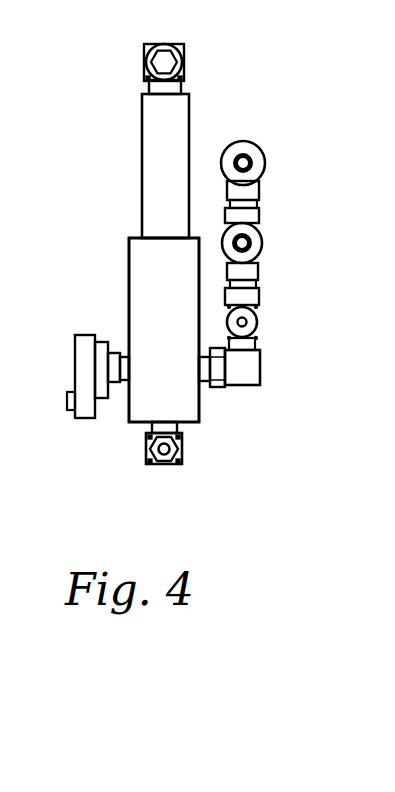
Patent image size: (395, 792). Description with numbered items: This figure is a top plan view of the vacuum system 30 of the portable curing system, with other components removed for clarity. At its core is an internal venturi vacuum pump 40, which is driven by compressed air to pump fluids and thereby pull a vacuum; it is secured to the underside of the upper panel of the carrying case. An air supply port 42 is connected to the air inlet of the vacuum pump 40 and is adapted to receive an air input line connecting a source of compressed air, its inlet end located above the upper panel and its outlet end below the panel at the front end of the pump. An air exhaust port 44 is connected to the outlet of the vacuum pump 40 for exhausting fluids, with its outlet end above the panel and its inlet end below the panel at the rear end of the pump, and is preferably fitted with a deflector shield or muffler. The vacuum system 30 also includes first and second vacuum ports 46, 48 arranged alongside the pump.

The vacuum system 30 is at (100, 222).
The internal venturi vacuum pump 40 is at (129, 288).
The air supply port 42 is at (170, 465).
The air exhaust port 44 is at (143, 62).
The first vacuum port 46 is at (252, 243).
The second vacuum port 48 is at (254, 158).